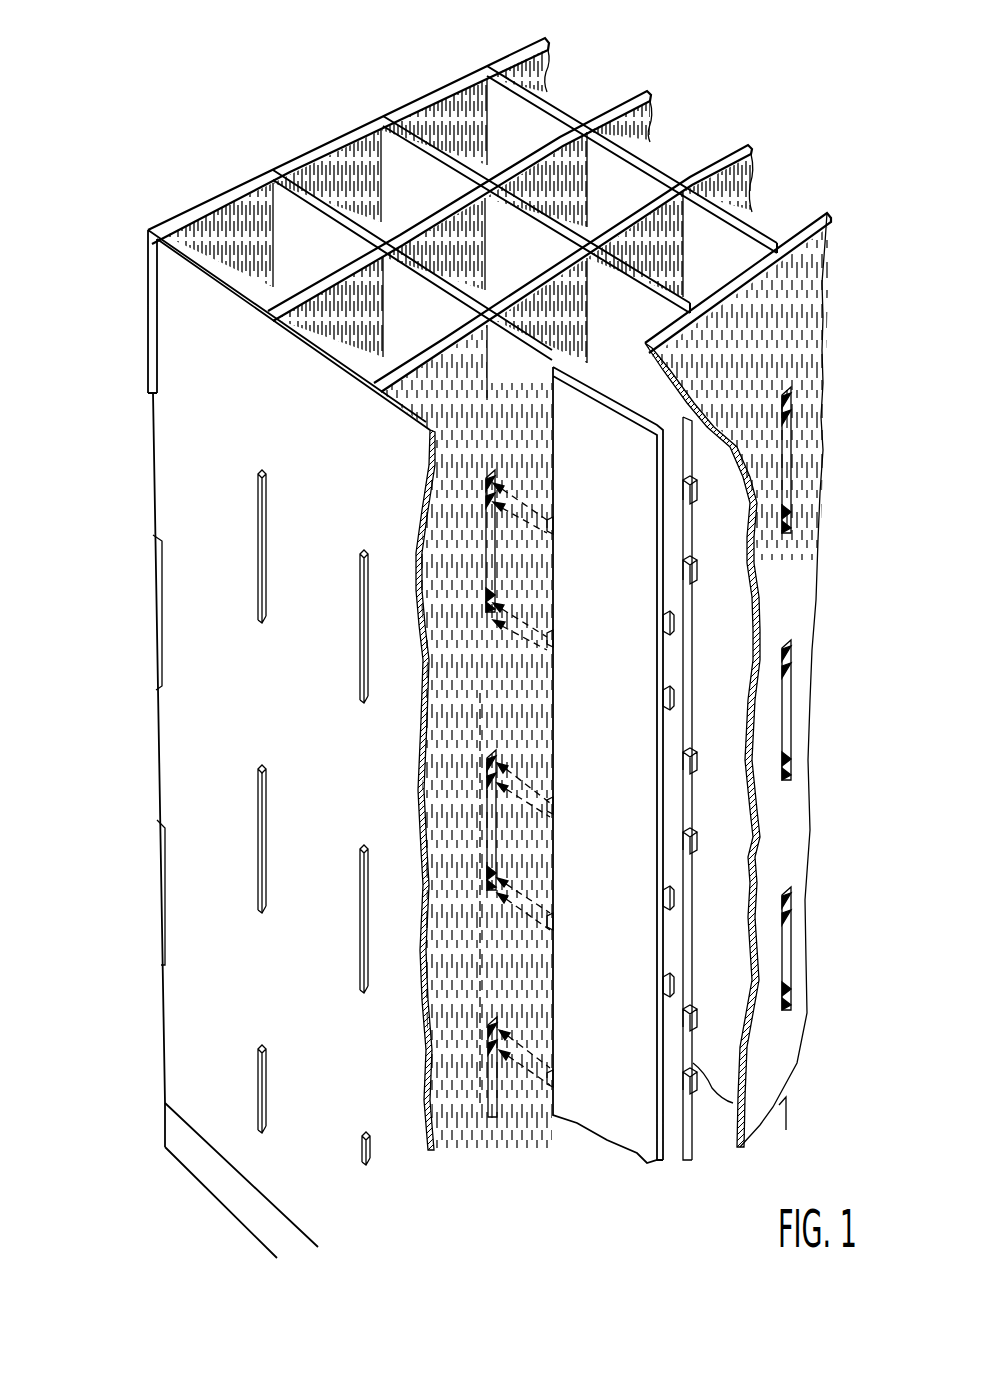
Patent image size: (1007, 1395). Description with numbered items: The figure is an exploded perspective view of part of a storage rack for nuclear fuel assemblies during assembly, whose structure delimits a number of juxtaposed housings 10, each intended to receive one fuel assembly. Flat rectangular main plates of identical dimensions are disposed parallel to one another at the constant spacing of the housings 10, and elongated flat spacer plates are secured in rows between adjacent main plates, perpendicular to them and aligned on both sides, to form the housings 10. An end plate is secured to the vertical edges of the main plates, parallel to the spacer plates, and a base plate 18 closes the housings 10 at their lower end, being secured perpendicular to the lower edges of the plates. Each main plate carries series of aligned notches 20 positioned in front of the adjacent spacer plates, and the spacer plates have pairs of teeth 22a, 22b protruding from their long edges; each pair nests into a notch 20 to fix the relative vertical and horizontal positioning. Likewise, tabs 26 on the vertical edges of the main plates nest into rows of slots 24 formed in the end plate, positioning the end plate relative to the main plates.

The housings 10 is at (258, 212).
The base plate 18 is at (210, 1167).
The notches 20 is at (487, 545).
The teeth 22a is at (550, 640).
The teeth 22b is at (665, 698).
The slots 24 is at (264, 800).
The tabs 26 is at (256, 840).